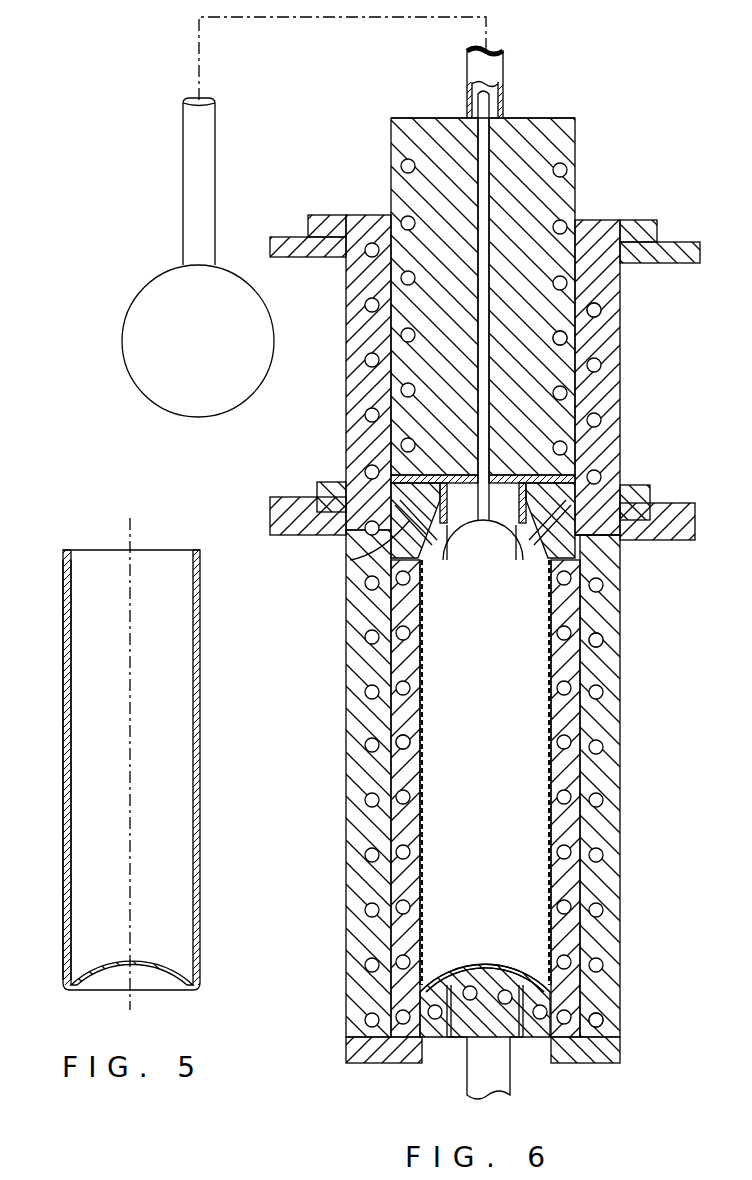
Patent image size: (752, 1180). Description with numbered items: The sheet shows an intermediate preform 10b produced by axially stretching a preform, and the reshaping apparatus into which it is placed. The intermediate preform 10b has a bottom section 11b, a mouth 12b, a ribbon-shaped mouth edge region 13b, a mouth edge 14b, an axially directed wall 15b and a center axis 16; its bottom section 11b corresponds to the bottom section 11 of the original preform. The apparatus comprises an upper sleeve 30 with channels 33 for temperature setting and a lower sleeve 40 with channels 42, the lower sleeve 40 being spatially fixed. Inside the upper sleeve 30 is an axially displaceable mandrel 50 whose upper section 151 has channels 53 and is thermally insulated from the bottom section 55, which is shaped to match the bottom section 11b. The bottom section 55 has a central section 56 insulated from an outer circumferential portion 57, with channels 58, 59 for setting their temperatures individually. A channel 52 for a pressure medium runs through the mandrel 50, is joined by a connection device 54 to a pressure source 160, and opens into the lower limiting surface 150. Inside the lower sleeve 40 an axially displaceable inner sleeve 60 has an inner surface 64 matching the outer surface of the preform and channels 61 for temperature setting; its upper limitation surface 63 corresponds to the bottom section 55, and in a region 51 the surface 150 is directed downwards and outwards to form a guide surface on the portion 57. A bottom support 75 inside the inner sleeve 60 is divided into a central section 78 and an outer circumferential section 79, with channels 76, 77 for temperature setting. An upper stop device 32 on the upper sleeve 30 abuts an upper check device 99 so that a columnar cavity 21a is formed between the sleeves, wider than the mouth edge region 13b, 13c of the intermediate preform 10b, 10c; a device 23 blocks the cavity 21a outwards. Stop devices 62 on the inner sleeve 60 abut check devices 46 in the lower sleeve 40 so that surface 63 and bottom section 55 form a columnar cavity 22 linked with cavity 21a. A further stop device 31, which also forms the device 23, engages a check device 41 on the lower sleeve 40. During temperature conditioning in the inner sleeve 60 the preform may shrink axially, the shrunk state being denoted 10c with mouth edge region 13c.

In FIG. 6, the pressure source 160 is at (153, 279).
In FIG. 6, the channel for a pressure medium 52 is at (500, 128).
In FIG. 6, the connection device 54 is at (478, 93).
In FIG. 6, the mandrel 50 is at (553, 425).
In FIG. 6, the upper section of the mandrel 151 is at (578, 138).
In FIG. 6, the upper sleeve 30 is at (604, 382).
In FIG. 6, the channels 33 is at (602, 308).
In FIG. 6, the channels 53 is at (568, 342).
In FIG. 6, the upper stop device 32 is at (642, 228).
In FIG. 6, the upper check device 99 is at (692, 252).
In FIG. 6, the columnar cavity 21a is at (352, 483).
In FIG. 6, the blocking device 23 is at (316, 490).
In FIG. 6, the columnar cavity 22 is at (346, 553).
In FIG. 6, the upper limitation surface of the inner sleeve 63 is at (380, 570).
In FIG. 6, the bottom section of the mandrel 55 is at (540, 478).
In FIG. 6, the outer circumferential portion of the bottom section 57 is at (433, 520).
In FIG. 6, the lower limiting surface of the bottom section 150 is at (560, 560).
In FIG. 6, the channel 58 is at (478, 560).
In FIG. 6, the channel 59 is at (447, 558).
In FIG. 6, the central section of the bottom section 56 is at (518, 560).
In FIG. 6, the region of the lower limitation surface 51 is at (600, 545).
In FIG. 6, the stop device 31 is at (655, 510).
In FIG. 6, the check device 41 is at (698, 520).
In FIG. 6, the inner surface of the inner sleeve 64 is at (420, 668).
In FIG. 6, the lower sleeve 40 is at (605, 785).
In FIG. 6, the channels 42 is at (603, 642).
In FIG. 6, the inner sleeve 60 is at (410, 772).
In FIG. 6, the channels 61 is at (410, 742).
In FIG. 5, the mouth edge region 13b is at (68, 600).
In FIG. 6, the mouth edge region 13b is at (575, 615).
In FIG. 6, the mouth edge region 13c is at (549, 640).
In FIG. 5, the intermediate preform 10b is at (82, 664).
In FIG. 6, the intermediate preform 10b is at (530, 690).
In FIG. 6, the intermediate preform 10c is at (551, 698).
In FIG. 6, the channel 76 is at (470, 986).
In FIG. 6, the channel 77 is at (432, 992).
In FIG. 6, the bottom section 11 is at (480, 985).
In FIG. 6, the stop device 62 is at (612, 1068).
In FIG. 6, the check device 46 is at (608, 1030).
In FIG. 6, the bottom support 75 is at (487, 1040).
In FIG. 6, the central section of the bottom support 78 is at (460, 1045).
In FIG. 6, the outer circumferential section of the bottom support 79 is at (540, 1045).
In FIG. 5, the center axis 16 is at (131, 521).
In FIG. 5, the mouth edge 14b is at (68, 550).
In FIG. 5, the mouth 12b is at (172, 570).
In FIG. 5, the axially directed wall 15b is at (64, 740).
In FIG. 5, the bottom section 11b is at (162, 985).